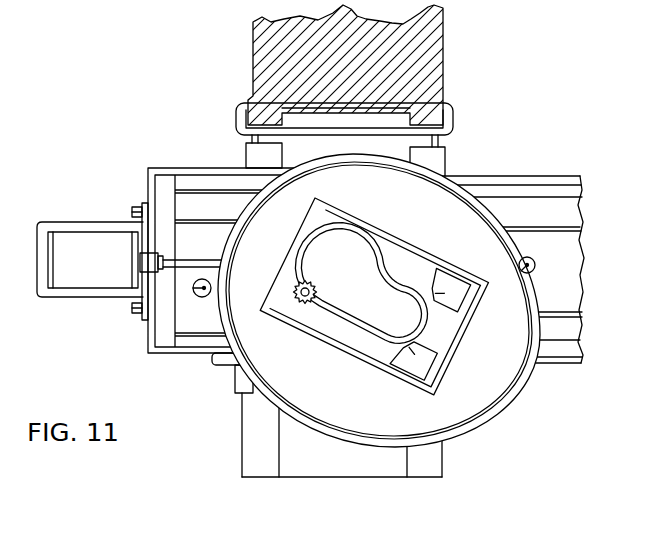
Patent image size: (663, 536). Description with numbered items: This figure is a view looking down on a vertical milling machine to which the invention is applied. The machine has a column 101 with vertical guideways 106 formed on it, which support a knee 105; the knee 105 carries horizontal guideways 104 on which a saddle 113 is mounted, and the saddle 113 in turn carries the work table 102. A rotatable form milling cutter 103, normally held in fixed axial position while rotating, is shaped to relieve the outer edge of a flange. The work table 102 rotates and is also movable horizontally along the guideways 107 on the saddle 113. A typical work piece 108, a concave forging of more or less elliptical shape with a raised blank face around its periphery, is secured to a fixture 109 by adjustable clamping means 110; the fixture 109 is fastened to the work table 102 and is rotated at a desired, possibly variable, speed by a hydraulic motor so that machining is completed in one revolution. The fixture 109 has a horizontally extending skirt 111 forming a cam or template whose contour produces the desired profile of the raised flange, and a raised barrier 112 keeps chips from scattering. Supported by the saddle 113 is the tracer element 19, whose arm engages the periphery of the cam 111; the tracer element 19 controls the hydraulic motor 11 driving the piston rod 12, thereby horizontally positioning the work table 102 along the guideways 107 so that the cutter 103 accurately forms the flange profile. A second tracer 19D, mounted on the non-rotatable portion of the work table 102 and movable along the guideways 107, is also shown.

The hydraulic motor 11 is at (77, 233).
The piston rod 12 is at (207, 259).
The tracer element 19 is at (203, 297).
The tracer 19D is at (527, 257).
The column 101 is at (253, 41).
The work table 102 is at (379, 300).
The rotatable form milling cutter 103 is at (316, 290).
The horizontal guideways 104 is at (442, 465).
The knee 105 is at (323, 478).
The vertical guideways 106 is at (455, 118).
The guideways 107 is at (568, 312).
The work piece 108 is at (361, 283).
The fixture 109 is at (466, 334).
The adjustable clamping means 110 is at (440, 296).
The skirt 111 is at (530, 384).
The raised barrier 112 is at (350, 431).
The saddle 113 is at (158, 168).